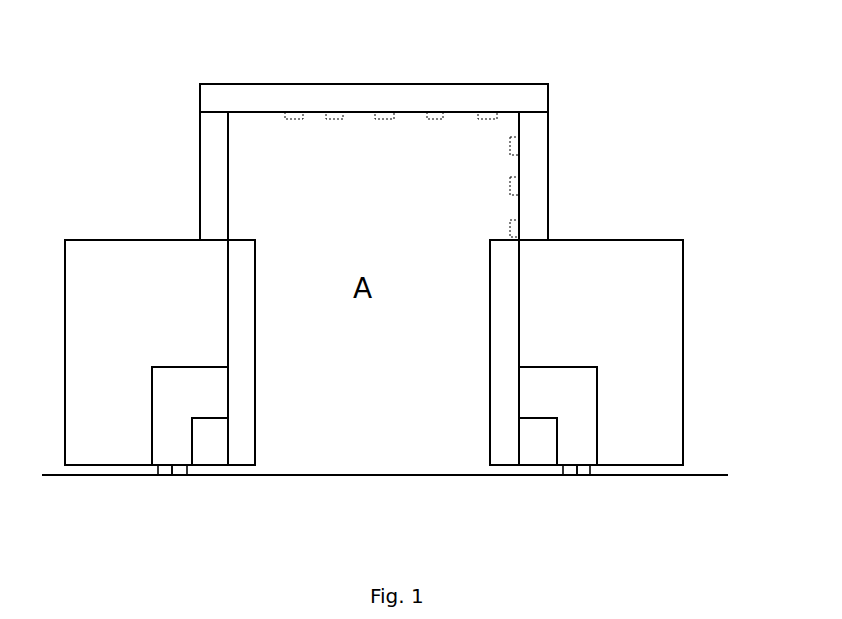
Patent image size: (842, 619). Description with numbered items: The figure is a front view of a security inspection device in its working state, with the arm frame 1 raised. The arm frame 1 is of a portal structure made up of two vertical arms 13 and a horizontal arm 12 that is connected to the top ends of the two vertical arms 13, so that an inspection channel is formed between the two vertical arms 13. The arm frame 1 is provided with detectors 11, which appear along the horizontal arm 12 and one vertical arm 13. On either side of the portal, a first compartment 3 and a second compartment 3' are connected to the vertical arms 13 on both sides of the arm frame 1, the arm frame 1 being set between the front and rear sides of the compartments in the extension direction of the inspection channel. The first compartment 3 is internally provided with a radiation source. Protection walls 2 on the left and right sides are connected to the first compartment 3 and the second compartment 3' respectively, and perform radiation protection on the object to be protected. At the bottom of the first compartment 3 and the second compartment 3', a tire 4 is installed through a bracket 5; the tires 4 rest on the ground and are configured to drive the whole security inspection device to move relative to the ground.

The arm frame 1 is at (548, 165).
The protection wall 2 is at (507, 358).
The first compartment 3 is at (160, 305).
The second compartment 3' is at (633, 352).
The tire 4 is at (168, 470).
The bracket 5 is at (577, 457).
The detector 11 is at (333, 110).
The horizontal arm 12 is at (418, 103).
The vertical arm 13 is at (215, 150).